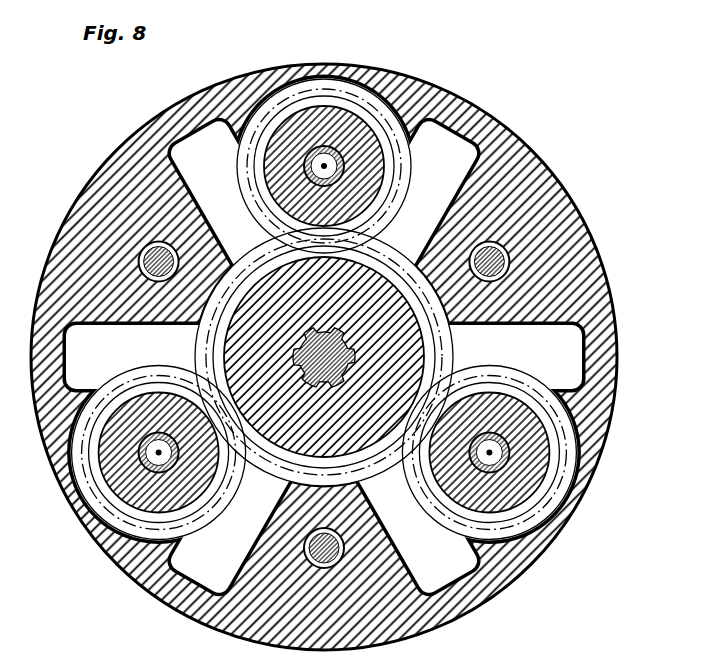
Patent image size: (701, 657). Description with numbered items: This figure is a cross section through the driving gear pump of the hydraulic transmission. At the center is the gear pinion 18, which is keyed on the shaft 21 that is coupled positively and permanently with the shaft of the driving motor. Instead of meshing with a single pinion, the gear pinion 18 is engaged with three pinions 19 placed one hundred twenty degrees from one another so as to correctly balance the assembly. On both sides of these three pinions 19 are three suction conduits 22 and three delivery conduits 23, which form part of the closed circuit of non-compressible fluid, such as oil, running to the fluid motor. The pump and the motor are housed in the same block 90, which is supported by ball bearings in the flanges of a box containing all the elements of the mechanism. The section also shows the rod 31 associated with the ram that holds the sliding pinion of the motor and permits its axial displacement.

The gear pinion 18 is at (252, 346).
The pinion 19 is at (296, 120).
The shaft 21 is at (378, 277).
The suction conduit 22 is at (200, 150).
The delivery conduit 23 is at (435, 165).
The rod 31 is at (152, 283).
The block 90 is at (138, 575).